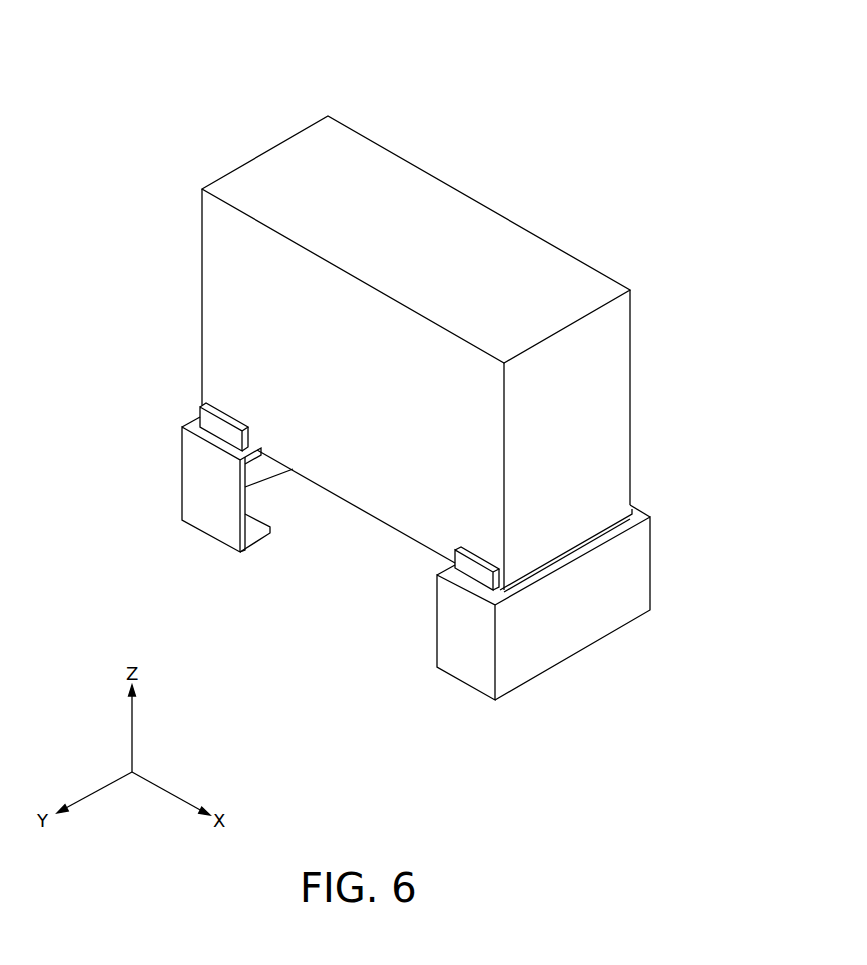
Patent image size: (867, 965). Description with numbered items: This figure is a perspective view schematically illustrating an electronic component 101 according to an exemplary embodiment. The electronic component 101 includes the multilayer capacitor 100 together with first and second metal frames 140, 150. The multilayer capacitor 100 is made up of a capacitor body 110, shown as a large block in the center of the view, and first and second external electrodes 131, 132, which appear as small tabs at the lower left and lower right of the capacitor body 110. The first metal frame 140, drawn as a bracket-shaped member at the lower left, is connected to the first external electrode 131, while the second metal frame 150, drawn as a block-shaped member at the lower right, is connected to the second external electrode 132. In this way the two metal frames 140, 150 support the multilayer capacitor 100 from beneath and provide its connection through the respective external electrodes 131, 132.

The electronic component 101 is at (409, 43).
The multilayer capacitor 100 is at (536, 171).
The capacitor body 110 is at (448, 197).
The first external electrode 131 is at (219, 404).
The second external electrode 132 is at (488, 568).
The first metal frame 140 is at (202, 542).
The second metal frame 150 is at (459, 691).